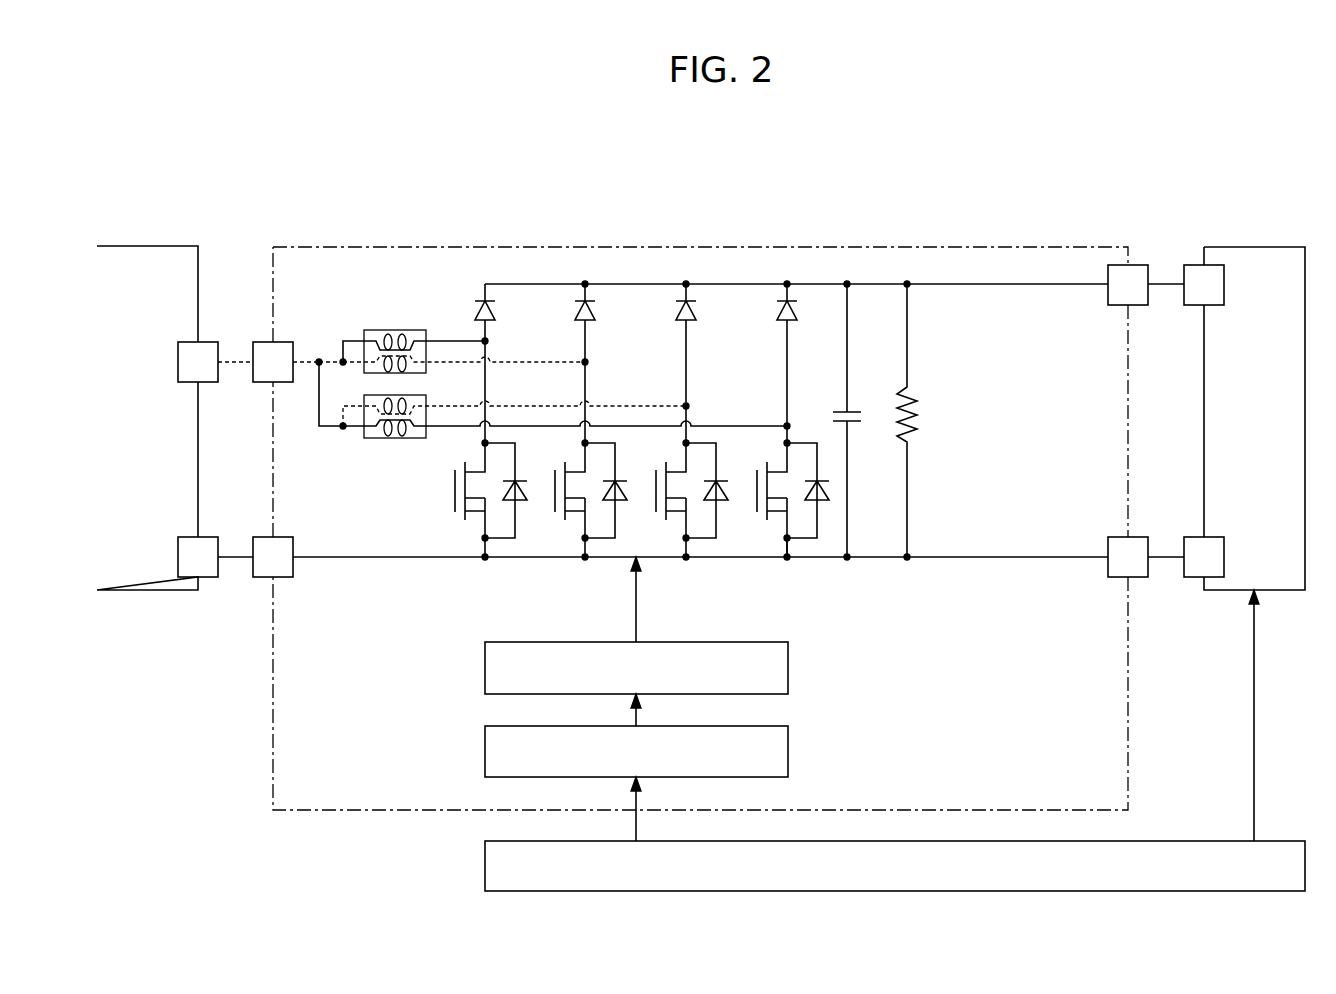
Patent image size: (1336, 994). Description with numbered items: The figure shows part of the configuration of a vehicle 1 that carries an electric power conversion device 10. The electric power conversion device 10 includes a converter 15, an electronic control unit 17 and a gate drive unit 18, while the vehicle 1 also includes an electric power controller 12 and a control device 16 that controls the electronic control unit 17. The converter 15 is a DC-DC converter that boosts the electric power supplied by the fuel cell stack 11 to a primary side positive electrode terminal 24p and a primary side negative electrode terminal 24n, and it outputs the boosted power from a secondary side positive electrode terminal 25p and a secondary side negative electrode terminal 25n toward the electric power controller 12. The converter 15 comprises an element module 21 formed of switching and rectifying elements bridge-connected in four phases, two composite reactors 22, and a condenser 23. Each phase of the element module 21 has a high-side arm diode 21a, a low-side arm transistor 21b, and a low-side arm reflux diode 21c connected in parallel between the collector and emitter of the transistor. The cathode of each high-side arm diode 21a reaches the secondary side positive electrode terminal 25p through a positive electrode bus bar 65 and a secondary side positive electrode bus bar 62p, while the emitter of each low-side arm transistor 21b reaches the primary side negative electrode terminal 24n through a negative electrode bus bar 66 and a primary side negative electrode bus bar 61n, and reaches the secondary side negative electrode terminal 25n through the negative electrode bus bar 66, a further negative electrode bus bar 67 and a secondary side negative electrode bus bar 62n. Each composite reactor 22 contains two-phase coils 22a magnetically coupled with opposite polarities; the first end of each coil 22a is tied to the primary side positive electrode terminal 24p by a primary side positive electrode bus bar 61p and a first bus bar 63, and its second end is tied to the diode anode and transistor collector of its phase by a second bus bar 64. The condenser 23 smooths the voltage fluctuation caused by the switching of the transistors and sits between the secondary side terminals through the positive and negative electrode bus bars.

The vehicle 1 is at (1213, 141).
The electric power conversion device 10 is at (1054, 247).
The fuel cell stack (FCS) 11 is at (160, 246).
The electric power controller 12 is at (1258, 247).
The converter 15 is at (354, 299).
The control device 16 is at (1178, 841).
The electronic control unit 17 is at (485, 751).
The gate drive unit 18 is at (485, 664).
The element module 21 is at (466, 299).
The high-side arm diode 21a is at (496, 310).
The low-side arm transistor 21b is at (455, 518).
The low-side arm reflux diode 21c is at (514, 503).
The composite reactor 22 is at (362, 450).
The coil 22a is at (377, 366).
The condenser 23 is at (854, 412).
The primary side positive electrode terminal 24p is at (268, 341).
The primary side negative electrode terminal 24n is at (263, 537).
The secondary side positive electrode terminal 25p is at (1136, 265).
The secondary side negative electrode terminal 25n is at (1138, 578).
The primary side positive electrode bus bar 61p is at (300, 360).
The primary side negative electrode bus bar 61n is at (304, 560).
The secondary side positive electrode bus bar 62p is at (1000, 288).
The secondary side negative electrode bus bar 62n is at (1000, 560).
The first bus bar 63 is at (321, 360).
The second bus bar 64 is at (434, 364).
The positive electrode bus bar 65 is at (530, 284).
The negative electrode bus bar 66 is at (768, 563).
The negative electrode bus bar 67 is at (819, 619).